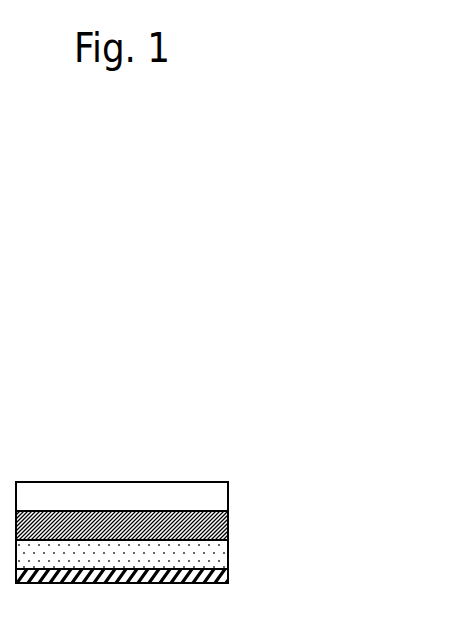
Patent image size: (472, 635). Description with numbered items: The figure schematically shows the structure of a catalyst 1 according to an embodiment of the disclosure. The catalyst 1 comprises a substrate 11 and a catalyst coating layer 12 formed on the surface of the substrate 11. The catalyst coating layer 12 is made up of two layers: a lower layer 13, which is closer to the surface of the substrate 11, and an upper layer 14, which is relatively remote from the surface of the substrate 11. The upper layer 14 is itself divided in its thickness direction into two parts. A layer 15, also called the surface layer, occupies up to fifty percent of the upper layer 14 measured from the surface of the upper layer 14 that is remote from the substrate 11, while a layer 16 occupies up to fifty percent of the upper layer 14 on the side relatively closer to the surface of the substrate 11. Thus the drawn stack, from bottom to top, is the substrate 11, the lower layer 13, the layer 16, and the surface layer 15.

The catalyst 1 is at (236, 438).
The substrate 11 is at (229, 577).
The catalyst coating layer 12 is at (367, 482).
The lower layer 13 is at (229, 549).
The upper layer 14 is at (310, 482).
The surface layer 15 is at (229, 492).
The layer closer to the substrate 16 is at (229, 521).